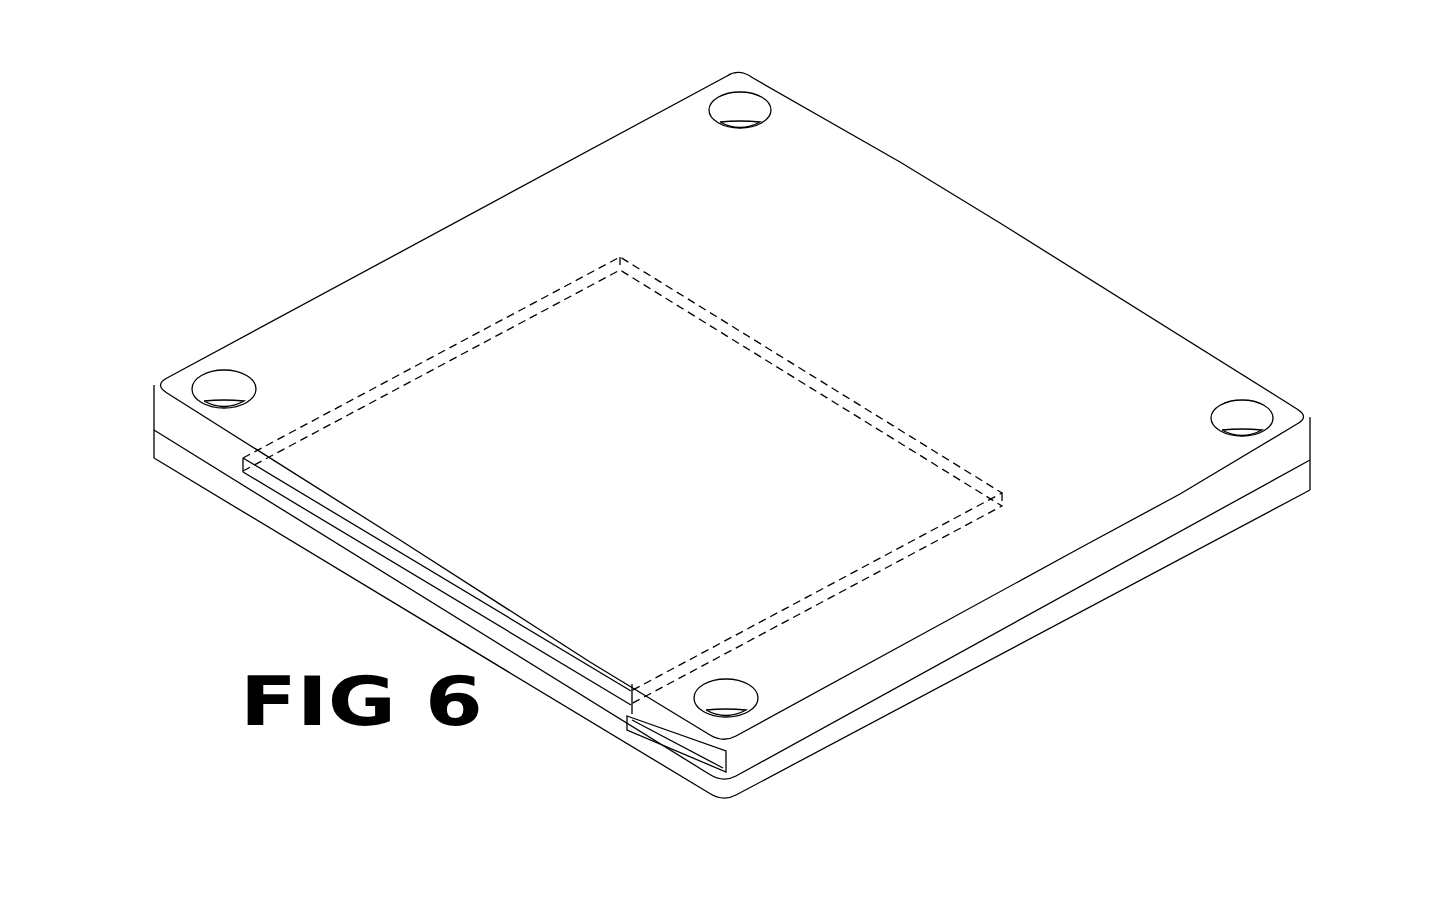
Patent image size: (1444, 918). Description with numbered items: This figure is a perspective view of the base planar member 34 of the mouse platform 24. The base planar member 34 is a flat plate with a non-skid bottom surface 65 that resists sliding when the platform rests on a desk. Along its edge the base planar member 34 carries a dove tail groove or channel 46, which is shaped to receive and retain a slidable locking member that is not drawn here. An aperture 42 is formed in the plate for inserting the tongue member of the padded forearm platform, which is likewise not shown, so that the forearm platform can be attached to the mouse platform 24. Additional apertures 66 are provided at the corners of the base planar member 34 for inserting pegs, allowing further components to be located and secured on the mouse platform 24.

The mouse platform 24 is at (1300, 406).
The base planar member 34 is at (1048, 612).
The non-skid bottom surface 65 is at (1228, 537).
The aperture 66 is at (227, 392).
The aperture 42 is at (267, 482).
The dove tail groove or channel 46 is at (660, 735).